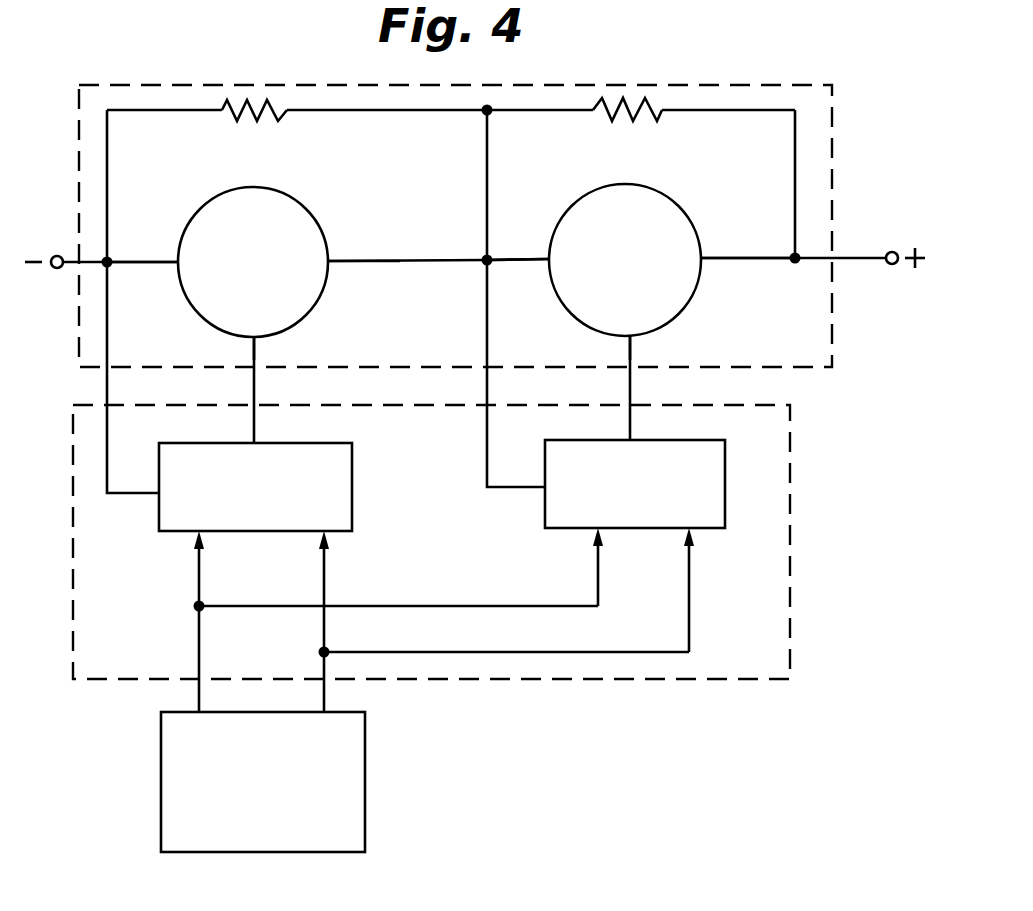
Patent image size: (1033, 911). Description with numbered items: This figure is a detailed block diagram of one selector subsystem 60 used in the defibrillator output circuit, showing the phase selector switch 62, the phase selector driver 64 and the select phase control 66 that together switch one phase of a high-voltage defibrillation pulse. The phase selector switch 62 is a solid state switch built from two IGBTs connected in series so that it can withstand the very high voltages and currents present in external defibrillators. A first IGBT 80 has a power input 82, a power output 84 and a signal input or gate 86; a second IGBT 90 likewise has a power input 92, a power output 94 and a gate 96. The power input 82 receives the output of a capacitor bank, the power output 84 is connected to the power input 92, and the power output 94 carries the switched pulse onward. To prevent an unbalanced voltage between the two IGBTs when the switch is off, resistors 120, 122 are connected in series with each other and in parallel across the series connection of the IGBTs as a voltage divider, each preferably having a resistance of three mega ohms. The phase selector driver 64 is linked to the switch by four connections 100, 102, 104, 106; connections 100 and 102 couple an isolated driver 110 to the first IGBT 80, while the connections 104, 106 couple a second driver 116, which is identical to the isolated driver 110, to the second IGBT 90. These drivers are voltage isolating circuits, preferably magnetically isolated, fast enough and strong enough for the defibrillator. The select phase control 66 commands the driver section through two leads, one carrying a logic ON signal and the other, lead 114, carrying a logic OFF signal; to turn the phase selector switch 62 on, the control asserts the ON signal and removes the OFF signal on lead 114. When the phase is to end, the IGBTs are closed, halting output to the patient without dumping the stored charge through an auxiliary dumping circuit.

The selector subsystem 60 is at (705, 742).
The phase selector switch 62 is at (832, 312).
The phase selector driver 64 is at (790, 410).
The select phase control 66 is at (368, 736).
The first IGBT 80 is at (318, 220).
The power input 82 is at (153, 262).
The power output 84 is at (390, 262).
The signal input or gate 86 is at (250, 355).
The second IGBT 90 is at (676, 197).
The power input 92 is at (530, 260).
The power output 94 is at (762, 259).
The signal input or gate 96 is at (622, 347).
The connection 100 is at (105, 387).
The connection 102 is at (256, 385).
The connection 104 is at (488, 385).
The connection 106 is at (632, 382).
The isolated driver 110 is at (352, 483).
The lead 114 is at (330, 691).
The driver 116 is at (725, 528).
The resistor 120 is at (276, 118).
The resistor 122 is at (606, 116).